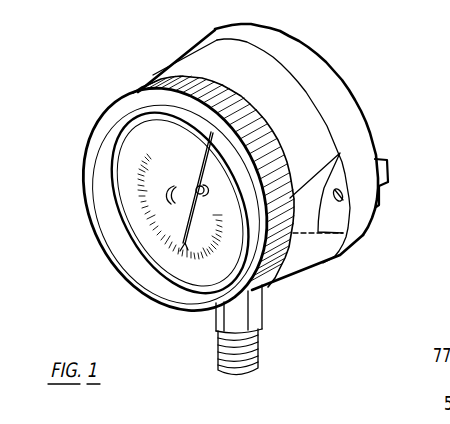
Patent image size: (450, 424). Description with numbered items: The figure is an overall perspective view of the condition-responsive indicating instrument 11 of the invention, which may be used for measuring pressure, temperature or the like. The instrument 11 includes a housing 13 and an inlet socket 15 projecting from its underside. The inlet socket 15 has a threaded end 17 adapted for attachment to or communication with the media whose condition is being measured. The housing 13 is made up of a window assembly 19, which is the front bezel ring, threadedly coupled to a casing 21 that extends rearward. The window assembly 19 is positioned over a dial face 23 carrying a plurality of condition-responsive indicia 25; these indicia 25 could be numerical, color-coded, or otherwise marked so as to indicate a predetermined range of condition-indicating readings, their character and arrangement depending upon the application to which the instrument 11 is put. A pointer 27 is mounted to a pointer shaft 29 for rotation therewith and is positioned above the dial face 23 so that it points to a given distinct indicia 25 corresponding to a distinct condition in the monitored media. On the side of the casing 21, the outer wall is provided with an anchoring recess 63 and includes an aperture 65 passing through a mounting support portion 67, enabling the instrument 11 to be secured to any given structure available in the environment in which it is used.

The condition-responsive indicating instrument 11 is at (110, 70).
The housing 13 is at (321, 270).
The inlet socket 15 is at (264, 335).
The threaded end 17 is at (258, 357).
The window assembly 19 is at (86, 151).
The casing assembly 21 is at (337, 73).
The dial face 23 is at (217, 242).
The condition-responsive indicia 25 is at (177, 182).
The pointer 27 is at (210, 156).
The pointer shaft 29 is at (205, 194).
The anchoring recess 63 is at (305, 202).
The aperture 65 is at (343, 201).
The mounting support portion 67 is at (388, 178).